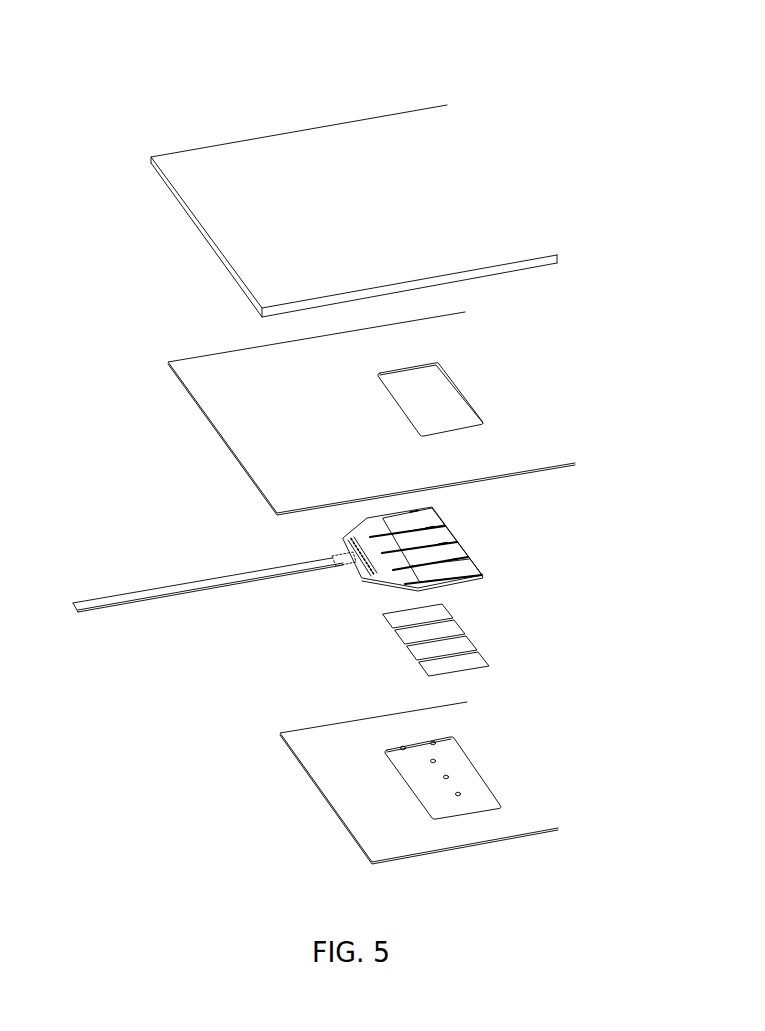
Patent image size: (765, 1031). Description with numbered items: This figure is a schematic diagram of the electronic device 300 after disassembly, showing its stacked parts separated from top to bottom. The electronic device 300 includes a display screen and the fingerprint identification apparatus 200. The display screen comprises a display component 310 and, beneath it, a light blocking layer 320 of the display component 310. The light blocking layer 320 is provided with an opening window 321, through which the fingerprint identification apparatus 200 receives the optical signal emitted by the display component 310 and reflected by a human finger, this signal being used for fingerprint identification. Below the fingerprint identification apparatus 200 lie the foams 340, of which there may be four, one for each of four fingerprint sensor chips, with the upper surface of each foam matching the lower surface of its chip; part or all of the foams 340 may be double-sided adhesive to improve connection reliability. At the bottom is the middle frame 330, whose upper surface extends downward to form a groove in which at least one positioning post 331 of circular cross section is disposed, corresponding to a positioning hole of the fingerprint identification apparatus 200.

The electronic device 300 is at (392, 49).
The display component 310 is at (375, 211).
The light blocking layer 320 is at (373, 409).
The opening window 321 is at (430, 383).
The fingerprint identification apparatus 200 is at (485, 530).
The foam 340 is at (482, 657).
The middle frame 330 is at (450, 799).
The positioning post 331 is at (460, 798).